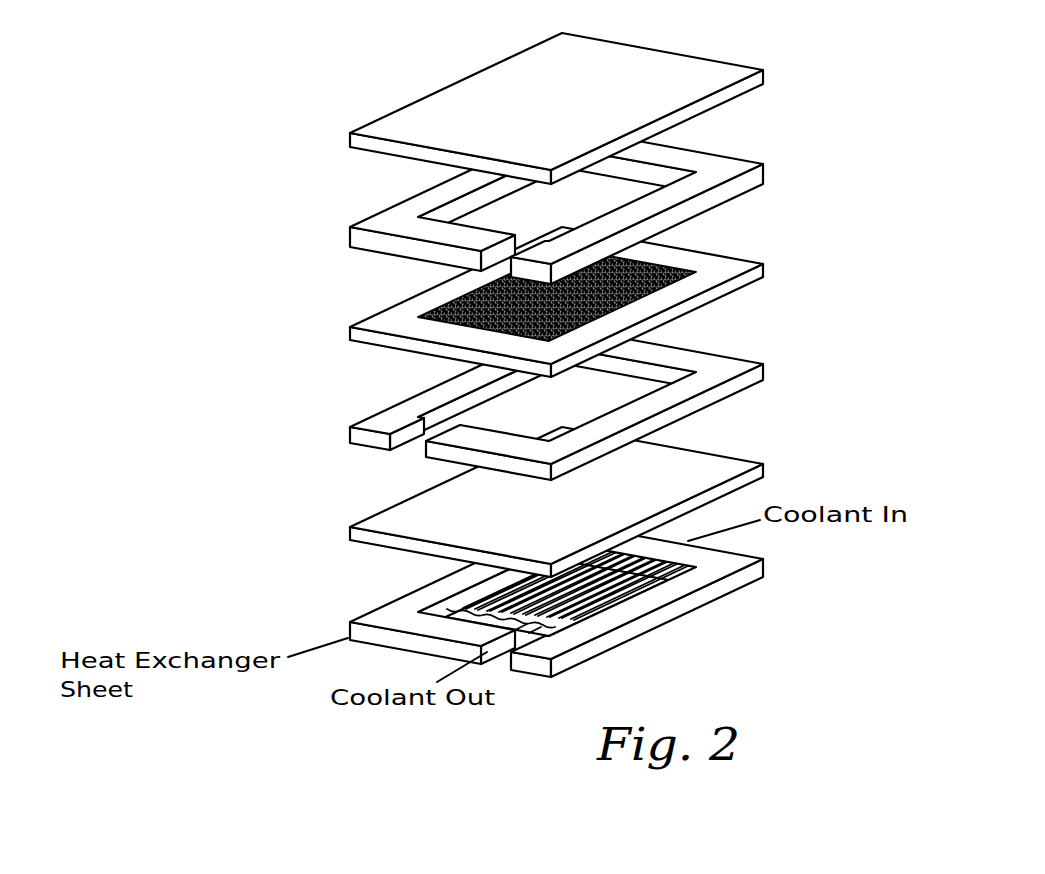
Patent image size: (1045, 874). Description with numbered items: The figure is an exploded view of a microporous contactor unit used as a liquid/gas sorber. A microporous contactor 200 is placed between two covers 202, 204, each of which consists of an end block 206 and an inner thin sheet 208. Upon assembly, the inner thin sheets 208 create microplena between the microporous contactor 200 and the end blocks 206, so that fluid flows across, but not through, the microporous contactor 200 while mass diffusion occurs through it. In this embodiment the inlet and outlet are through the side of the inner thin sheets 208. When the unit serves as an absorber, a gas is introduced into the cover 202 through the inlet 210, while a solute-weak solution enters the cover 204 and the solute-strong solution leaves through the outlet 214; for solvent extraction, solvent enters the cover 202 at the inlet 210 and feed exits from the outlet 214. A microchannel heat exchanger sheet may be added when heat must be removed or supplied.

The microporous contactor 200 is at (348, 338).
The cover 202 is at (810, 92).
The cover 204 is at (804, 413).
The end block 206 is at (420, 320).
The inner thin sheet 208 is at (420, 327).
The inlet 210 is at (480, 272).
The outlet 214 is at (395, 448).